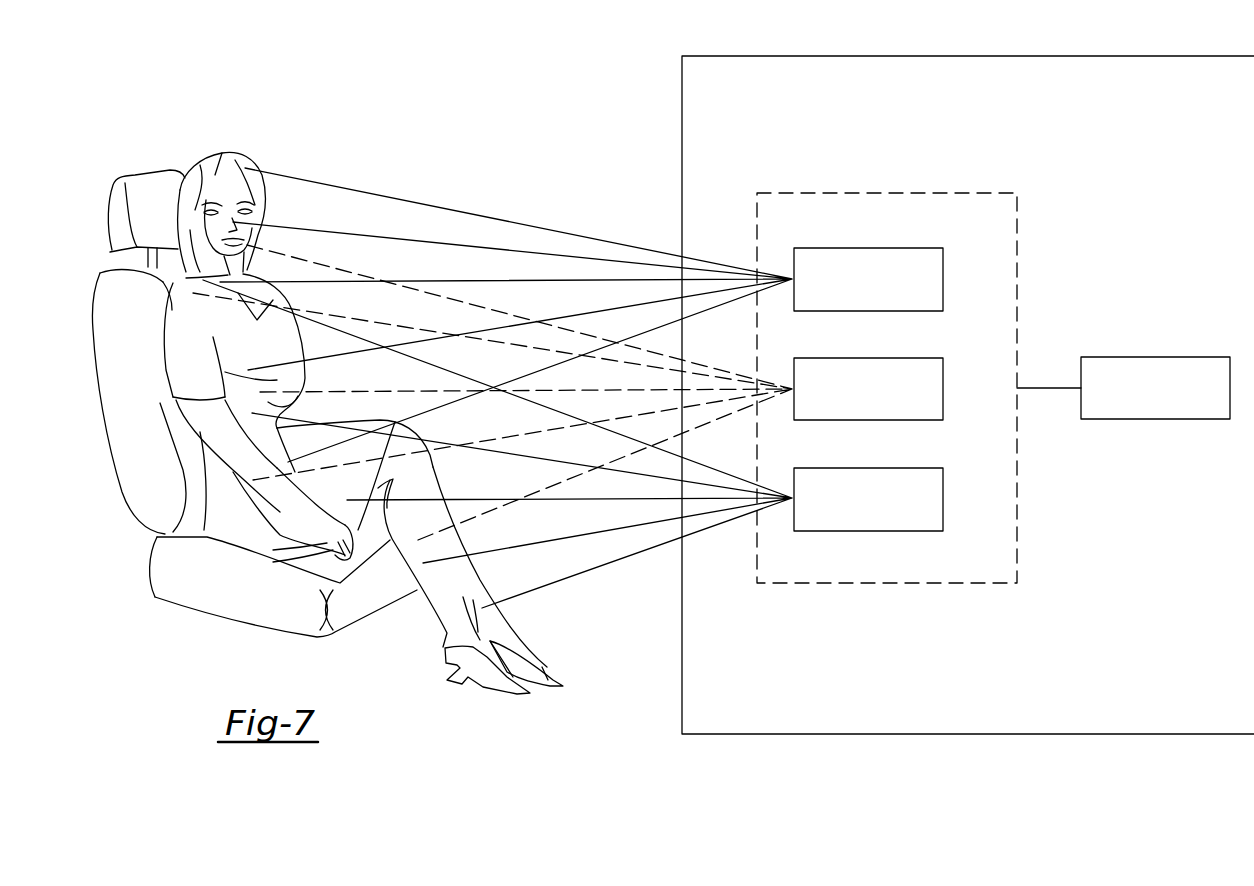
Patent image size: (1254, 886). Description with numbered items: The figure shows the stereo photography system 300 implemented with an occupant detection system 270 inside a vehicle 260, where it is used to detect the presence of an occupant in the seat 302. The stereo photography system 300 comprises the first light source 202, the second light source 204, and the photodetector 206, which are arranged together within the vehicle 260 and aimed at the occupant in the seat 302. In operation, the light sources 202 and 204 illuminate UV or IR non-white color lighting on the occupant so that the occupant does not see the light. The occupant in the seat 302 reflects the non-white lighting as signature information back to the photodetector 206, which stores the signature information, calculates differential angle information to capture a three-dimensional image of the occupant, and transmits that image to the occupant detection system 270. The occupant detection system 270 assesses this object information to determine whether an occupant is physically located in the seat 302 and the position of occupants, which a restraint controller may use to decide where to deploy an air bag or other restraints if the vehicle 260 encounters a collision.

The seat 302 is at (122, 187).
The vehicle 260 is at (682, 127).
The stereo photography system 300 is at (893, 192).
The first light source 202 is at (943, 278).
The photodetector 206 is at (943, 388).
The second light source 204 is at (943, 498).
The occupant detection system 270 is at (1157, 357).